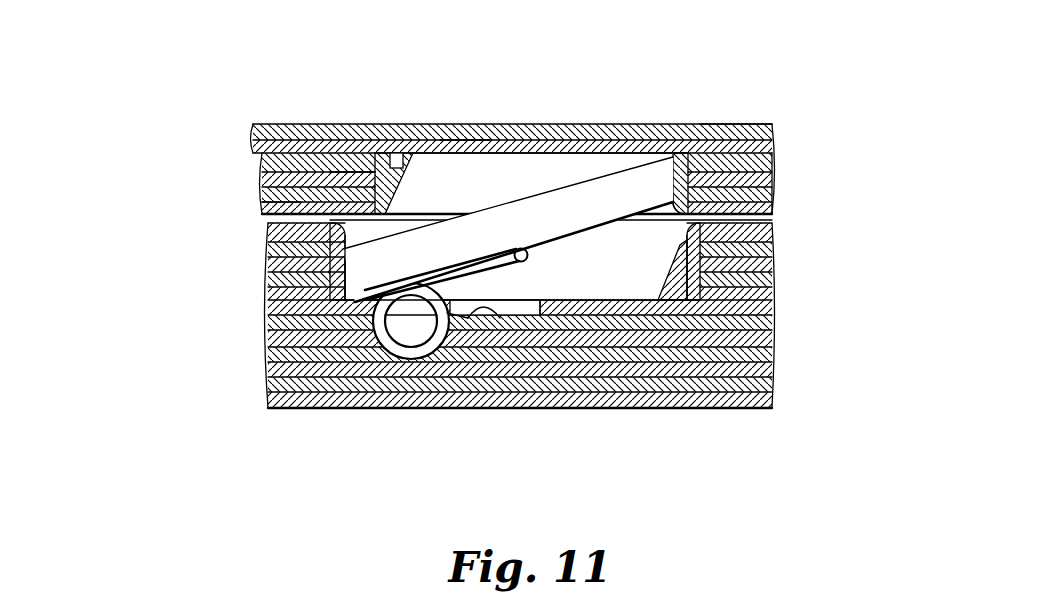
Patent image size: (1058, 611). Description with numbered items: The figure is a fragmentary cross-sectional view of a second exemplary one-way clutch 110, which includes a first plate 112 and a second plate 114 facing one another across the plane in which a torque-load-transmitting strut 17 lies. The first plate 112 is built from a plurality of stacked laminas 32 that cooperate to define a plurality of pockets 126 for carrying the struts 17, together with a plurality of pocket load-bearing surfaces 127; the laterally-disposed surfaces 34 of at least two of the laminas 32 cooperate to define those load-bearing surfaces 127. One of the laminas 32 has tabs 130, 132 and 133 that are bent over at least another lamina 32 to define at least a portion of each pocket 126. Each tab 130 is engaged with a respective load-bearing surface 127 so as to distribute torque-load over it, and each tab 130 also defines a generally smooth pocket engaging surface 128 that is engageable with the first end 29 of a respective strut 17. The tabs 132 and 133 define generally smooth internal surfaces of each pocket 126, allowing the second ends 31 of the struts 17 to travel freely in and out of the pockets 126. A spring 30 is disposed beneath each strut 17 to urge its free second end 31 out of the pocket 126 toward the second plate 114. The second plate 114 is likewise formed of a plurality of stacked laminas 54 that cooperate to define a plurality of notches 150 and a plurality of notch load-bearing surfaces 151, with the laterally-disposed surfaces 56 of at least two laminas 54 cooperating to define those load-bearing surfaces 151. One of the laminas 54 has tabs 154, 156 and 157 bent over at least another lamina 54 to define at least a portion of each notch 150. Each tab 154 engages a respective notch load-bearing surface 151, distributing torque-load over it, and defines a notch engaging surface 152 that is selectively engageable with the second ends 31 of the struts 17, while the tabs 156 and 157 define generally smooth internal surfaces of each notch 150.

The one-way clutch 110 is at (812, 188).
The first plate 112 is at (248, 352).
The second plate 114 is at (246, 178).
The torque-load-transmitting strut 17 is at (517, 196).
The first end of strut 29 is at (312, 270).
The spring 30 is at (505, 320).
The second end of strut 31 is at (772, 150).
The laminas of first plate 32 is at (268, 300).
The laterally-disposed surfaces 34 is at (356, 269).
The laminas of second plate 54 is at (262, 192).
The laterally-disposed surfaces 56 is at (388, 178).
The pockets 126 is at (548, 318).
The pocket load-bearing surfaces 127 is at (462, 318).
The pocket engaging surface 128 is at (490, 313).
The tabs 130 is at (343, 298).
The tabs 132 is at (590, 320).
The tabs 133 is at (673, 283).
The notches 150 is at (418, 153).
The notch load-bearing surfaces 151 is at (668, 172).
The notch engaging surface 152 is at (659, 200).
The tabs 154 is at (683, 153).
The tabs 156 is at (464, 147).
The tabs 157 is at (360, 178).